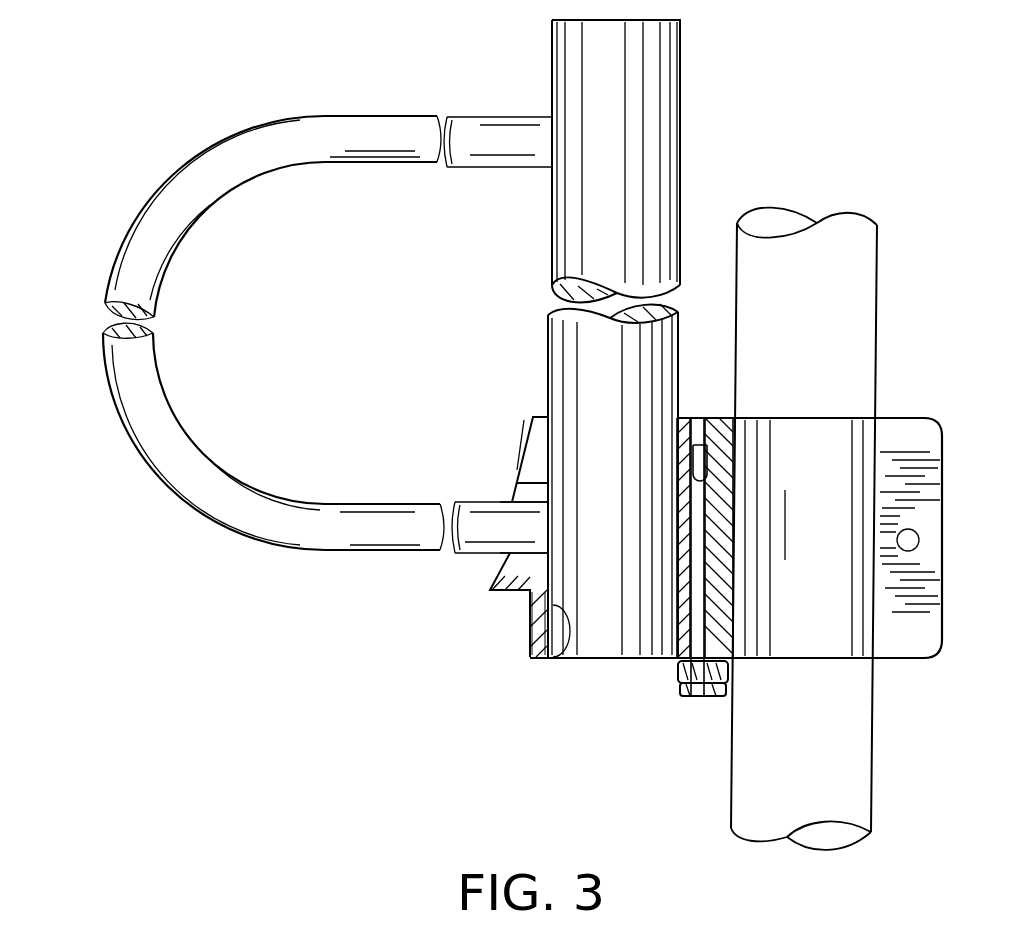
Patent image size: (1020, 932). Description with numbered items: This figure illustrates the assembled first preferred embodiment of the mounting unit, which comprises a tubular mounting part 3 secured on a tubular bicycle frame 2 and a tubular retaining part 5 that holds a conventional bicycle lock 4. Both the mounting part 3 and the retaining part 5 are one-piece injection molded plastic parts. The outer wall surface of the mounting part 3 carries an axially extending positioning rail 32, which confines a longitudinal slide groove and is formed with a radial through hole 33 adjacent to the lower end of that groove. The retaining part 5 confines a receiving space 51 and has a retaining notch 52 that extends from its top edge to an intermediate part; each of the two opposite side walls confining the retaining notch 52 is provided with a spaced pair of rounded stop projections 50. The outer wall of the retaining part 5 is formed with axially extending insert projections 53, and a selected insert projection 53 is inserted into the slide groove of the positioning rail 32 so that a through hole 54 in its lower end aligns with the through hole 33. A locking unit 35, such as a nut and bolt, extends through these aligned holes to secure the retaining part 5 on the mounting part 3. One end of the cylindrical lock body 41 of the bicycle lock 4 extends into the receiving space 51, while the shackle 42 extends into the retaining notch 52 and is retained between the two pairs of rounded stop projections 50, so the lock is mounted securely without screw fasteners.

The tubular bicycle frame 2 is at (868, 323).
The tubular mounting part 3 is at (898, 671).
The bicycle lock 4 is at (343, 553).
The cylindrical lock body 41 is at (664, 100).
The shackle 42 is at (387, 125).
The tubular retaining part 5 is at (518, 645).
The rounded stop projections 50 is at (520, 494).
The receiving space 51 is at (548, 608).
The retaining notch 52 is at (535, 465).
The insert projection 53 is at (712, 468).
The positioning rail 32 is at (698, 418).
The radial through hole 33 is at (692, 695).
The locking unit 35 is at (678, 672).
The through hole 54 is at (712, 698).